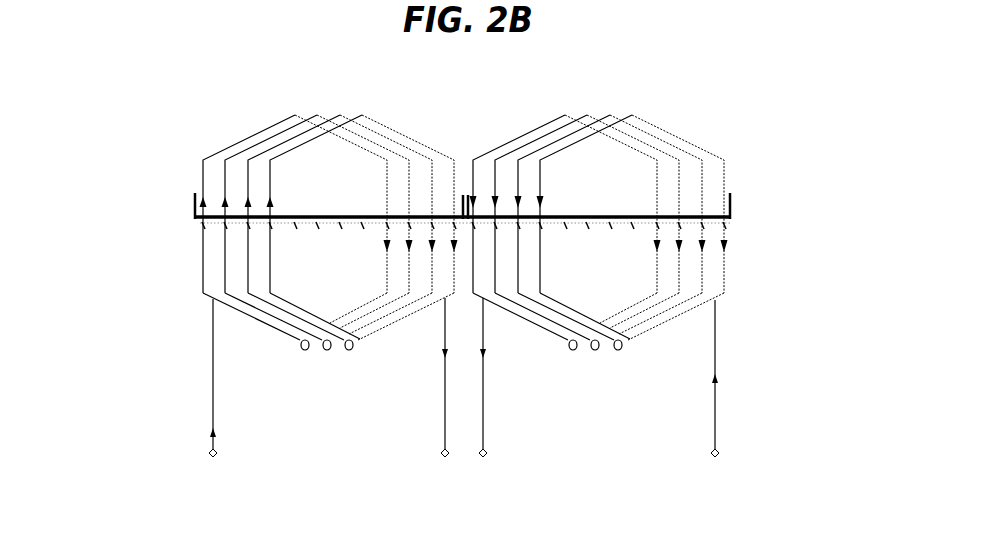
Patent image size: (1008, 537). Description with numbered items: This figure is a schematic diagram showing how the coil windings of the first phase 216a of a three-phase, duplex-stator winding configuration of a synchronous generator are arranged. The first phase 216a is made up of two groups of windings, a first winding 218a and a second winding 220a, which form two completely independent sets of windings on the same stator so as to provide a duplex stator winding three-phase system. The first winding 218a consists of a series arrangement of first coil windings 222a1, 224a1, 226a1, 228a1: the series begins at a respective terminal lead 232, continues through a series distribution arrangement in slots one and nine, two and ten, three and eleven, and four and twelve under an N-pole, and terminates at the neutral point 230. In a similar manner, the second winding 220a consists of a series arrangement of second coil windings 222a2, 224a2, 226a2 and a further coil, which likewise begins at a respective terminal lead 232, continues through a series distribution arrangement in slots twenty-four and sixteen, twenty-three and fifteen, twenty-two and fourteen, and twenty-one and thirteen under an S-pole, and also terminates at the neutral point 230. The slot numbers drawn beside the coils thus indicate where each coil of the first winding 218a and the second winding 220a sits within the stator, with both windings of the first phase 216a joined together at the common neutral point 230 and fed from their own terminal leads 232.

The first phase 216a is at (752, 85).
The first winding 218a is at (289, 80).
The second winding 220a is at (639, 86).
The first coil winding 222a1 is at (213, 157).
The second coil winding 222a2 is at (723, 282).
The first coil winding 224a1 is at (227, 176).
The second coil winding 224a2 is at (522, 135).
The first coil winding 226a1 is at (250, 258).
The second coil winding 226a2 is at (680, 286).
The first coil winding 228a1 is at (270, 267).
The neutral point 230 is at (462, 392).
The terminal lead 232 is at (462, 392).